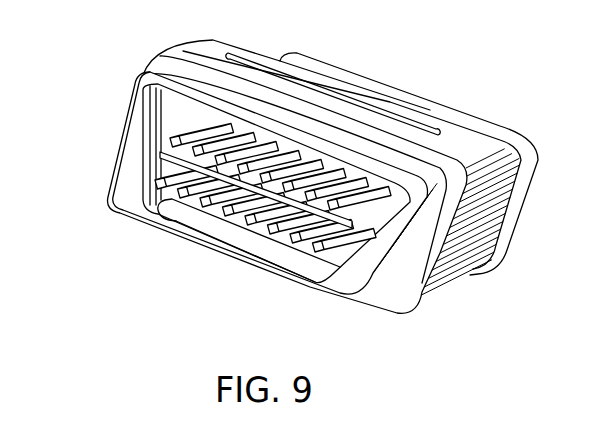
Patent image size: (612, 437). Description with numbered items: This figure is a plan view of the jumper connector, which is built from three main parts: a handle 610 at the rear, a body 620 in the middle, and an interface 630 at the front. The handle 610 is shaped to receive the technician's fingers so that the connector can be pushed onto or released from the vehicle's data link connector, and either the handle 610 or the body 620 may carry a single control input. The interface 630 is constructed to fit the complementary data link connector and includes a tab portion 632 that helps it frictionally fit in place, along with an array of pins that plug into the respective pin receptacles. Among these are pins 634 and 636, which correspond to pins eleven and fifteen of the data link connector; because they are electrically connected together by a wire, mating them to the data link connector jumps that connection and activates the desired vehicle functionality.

The handle 610 is at (463, 112).
The body 620 is at (383, 293).
The interface 630 is at (140, 79).
The tab portion 632 is at (163, 166).
The pin 634 is at (196, 211).
The pin 636 is at (277, 248).